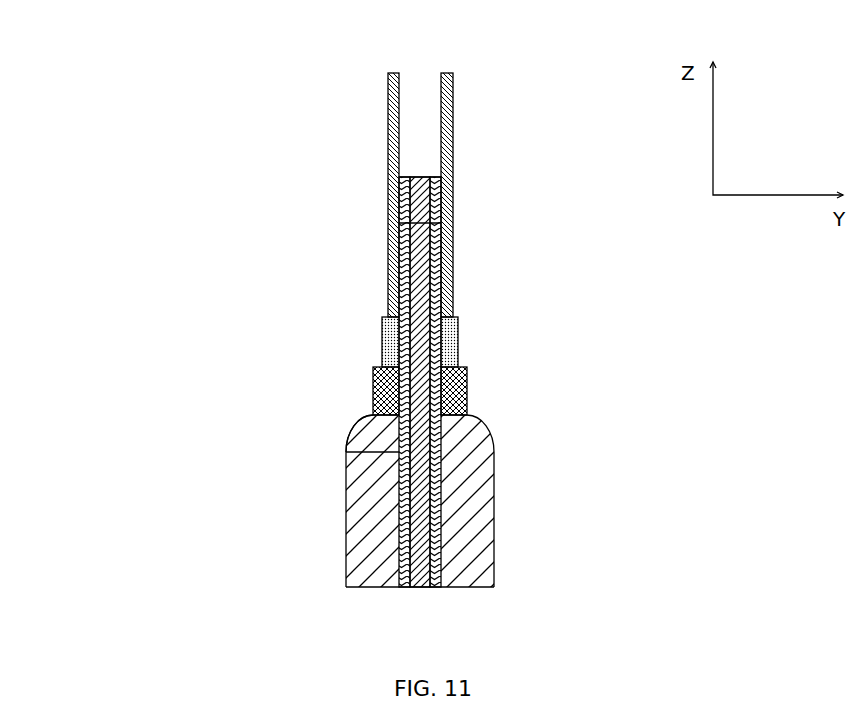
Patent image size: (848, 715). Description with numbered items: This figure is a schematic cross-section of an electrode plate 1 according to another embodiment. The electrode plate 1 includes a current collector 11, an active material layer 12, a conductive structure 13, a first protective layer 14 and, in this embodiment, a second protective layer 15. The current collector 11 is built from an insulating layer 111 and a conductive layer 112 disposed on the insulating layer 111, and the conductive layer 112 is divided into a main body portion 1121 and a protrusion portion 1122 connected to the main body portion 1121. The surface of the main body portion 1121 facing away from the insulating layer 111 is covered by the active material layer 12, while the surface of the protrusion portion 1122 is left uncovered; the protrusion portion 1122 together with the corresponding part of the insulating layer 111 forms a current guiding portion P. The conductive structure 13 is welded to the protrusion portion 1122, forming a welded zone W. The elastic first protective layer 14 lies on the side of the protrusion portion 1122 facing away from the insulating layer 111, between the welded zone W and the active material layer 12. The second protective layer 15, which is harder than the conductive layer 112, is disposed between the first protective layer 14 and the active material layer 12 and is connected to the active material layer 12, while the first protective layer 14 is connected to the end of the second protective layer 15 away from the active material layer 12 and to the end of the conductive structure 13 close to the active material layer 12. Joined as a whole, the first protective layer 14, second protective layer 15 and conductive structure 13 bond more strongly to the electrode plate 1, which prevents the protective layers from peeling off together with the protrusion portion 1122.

The electrode plate 1 is at (113, 210).
The current collector 11 is at (191, 402).
The insulating layer 111 is at (400, 506).
The conductive layer 112 is at (256, 367).
The main body portion 1121 is at (346, 451).
The protrusion portion 1122 is at (372, 378).
The active material layer 12 is at (494, 505).
The conductive structure 13 is at (388, 182).
The first protective layer 14 is at (381, 324).
The second protective layer 15 is at (468, 387).
The current guiding portion P is at (420, 162).
The welded zone W is at (454, 247).